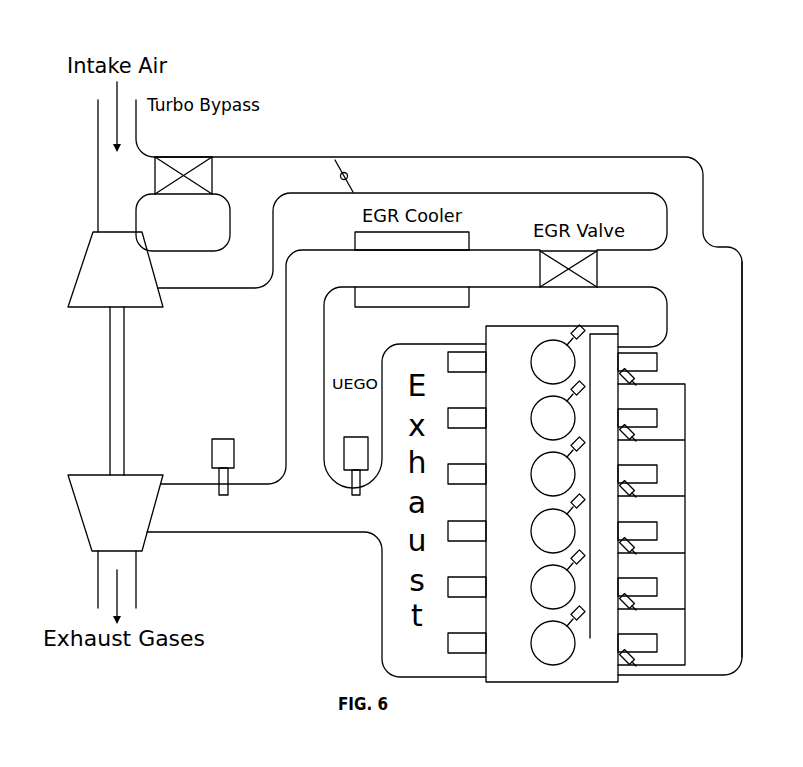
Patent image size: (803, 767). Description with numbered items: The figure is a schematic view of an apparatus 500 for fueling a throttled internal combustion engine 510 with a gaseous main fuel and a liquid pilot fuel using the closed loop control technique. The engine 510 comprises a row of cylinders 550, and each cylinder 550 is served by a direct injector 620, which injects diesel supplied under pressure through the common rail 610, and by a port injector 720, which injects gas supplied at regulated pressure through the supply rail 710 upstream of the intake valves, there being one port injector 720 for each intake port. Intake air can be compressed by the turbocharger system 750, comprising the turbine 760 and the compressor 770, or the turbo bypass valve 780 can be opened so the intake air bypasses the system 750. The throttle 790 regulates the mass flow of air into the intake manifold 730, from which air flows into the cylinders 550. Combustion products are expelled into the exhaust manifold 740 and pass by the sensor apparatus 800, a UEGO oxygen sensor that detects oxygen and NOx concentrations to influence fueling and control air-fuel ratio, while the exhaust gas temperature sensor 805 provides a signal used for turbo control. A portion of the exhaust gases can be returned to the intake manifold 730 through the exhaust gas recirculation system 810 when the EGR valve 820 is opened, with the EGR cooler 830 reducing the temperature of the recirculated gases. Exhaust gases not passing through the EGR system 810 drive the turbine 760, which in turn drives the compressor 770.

The apparatus 500 is at (726, 126).
The internal combustion engine 510 is at (553, 688).
The cylinder 550 is at (532, 355).
The common rail 610 is at (590, 638).
The direct injector 620 is at (563, 488).
The supply rail 710 is at (685, 384).
The port injector 720 is at (631, 386).
The intake manifold 730 is at (742, 314).
The exhaust manifold 740 is at (382, 600).
The turbocharger system 750 is at (65, 378).
The turbine 760 is at (80, 516).
The compressor 770 is at (82, 268).
The turbo bypass valve 780 is at (212, 185).
The throttle 790 is at (353, 178).
The sensor apparatus 800 is at (355, 437).
The exhaust gas temperature sensor 805 is at (222, 438).
The exhaust gas recirculation system 810 is at (341, 220).
The EGR valve 820 is at (597, 276).
The EGR cooler 830 is at (469, 241).